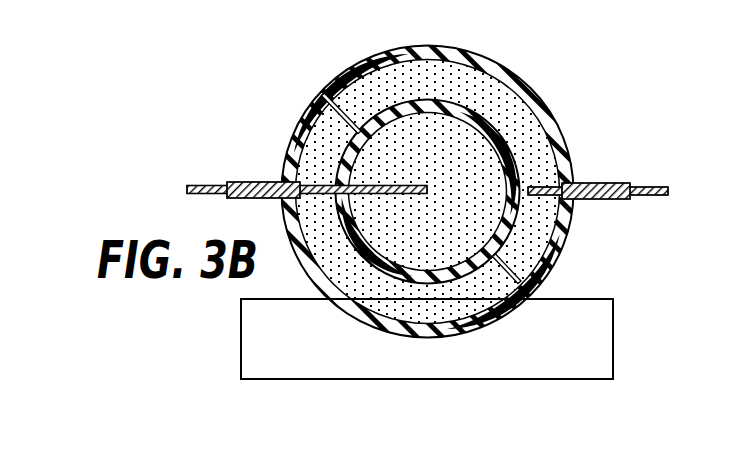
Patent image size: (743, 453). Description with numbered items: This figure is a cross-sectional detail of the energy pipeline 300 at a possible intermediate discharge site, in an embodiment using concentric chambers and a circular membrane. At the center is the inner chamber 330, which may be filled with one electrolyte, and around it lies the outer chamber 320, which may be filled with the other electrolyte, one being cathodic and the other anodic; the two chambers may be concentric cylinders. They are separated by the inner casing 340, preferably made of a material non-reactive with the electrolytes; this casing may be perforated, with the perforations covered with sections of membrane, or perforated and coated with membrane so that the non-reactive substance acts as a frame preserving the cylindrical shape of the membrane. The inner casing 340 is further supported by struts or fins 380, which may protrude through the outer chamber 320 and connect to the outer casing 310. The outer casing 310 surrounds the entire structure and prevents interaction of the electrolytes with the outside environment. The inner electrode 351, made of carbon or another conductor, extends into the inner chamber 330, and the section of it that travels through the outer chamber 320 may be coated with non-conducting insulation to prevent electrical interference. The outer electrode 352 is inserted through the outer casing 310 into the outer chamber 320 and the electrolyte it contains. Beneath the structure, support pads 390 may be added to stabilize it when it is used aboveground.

The energy pipeline 300 is at (446, 177).
The outer casing 310 is at (503, 62).
The outer chamber 320 is at (446, 82).
The inner chamber 330 is at (425, 130).
The inner casing 340 is at (509, 119).
The inner electrode 351 is at (220, 185).
The outer electrode 352 is at (640, 183).
The struts or fins 380 is at (334, 112).
The support pads 390 is at (613, 331).